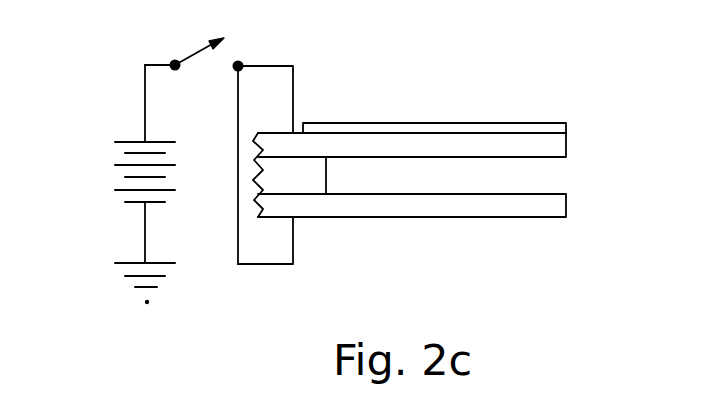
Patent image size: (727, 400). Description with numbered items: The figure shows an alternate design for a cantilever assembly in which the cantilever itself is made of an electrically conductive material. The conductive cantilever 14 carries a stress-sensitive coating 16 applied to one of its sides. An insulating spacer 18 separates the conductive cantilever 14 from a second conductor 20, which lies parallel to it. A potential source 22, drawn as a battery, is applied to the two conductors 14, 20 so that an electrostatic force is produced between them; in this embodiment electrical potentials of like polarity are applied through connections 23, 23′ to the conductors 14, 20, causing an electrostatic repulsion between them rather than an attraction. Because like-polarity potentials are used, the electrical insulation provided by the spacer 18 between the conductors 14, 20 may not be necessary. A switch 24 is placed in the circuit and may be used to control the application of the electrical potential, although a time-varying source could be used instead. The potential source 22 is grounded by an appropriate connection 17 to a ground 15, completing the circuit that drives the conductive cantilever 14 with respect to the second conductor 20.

The conductive cantilever 14 is at (568, 147).
The ground 15 is at (143, 287).
The stress-sensitive coating 16 is at (568, 128).
The connection 17 is at (143, 237).
The insulating spacer 18 is at (330, 178).
The second conductor 20 is at (568, 205).
The potential source 22 is at (122, 163).
The connection 23 is at (296, 91).
The connection 23′ is at (296, 237).
The switch 24 is at (195, 52).